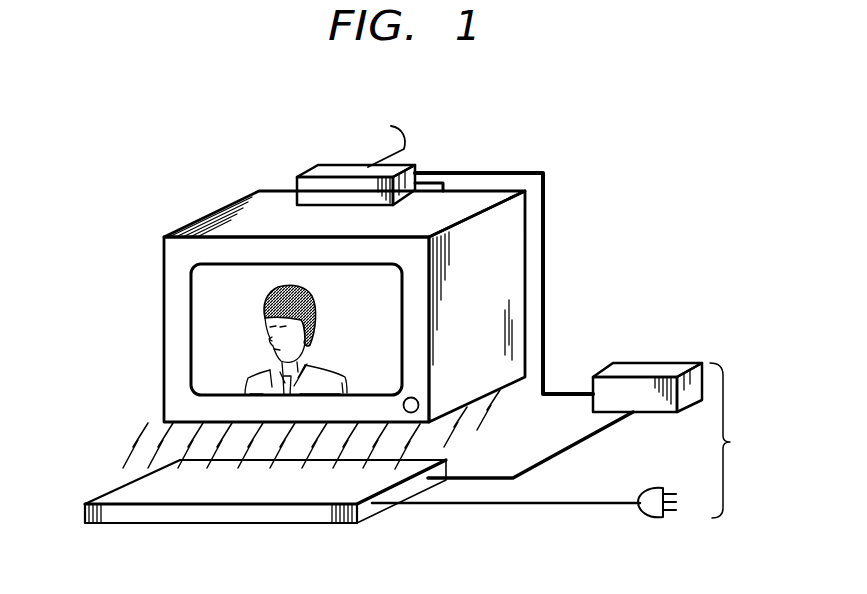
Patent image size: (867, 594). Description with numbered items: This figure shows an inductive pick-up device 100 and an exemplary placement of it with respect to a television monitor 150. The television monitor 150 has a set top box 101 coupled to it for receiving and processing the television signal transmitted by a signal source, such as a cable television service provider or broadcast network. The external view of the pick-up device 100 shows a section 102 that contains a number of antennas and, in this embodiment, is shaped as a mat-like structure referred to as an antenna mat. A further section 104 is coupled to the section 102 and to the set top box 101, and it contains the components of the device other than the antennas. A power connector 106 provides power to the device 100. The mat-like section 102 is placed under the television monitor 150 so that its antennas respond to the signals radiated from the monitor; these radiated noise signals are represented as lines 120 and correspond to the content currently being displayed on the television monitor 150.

The inductive pick-up device 100 is at (743, 440).
The set top box 101 is at (333, 165).
The antenna mat section 102 is at (217, 525).
The component section 104 is at (662, 363).
The power connector 106 is at (663, 519).
The radiated noise signal lines 120 is at (110, 444).
The television monitor 150 is at (217, 214).